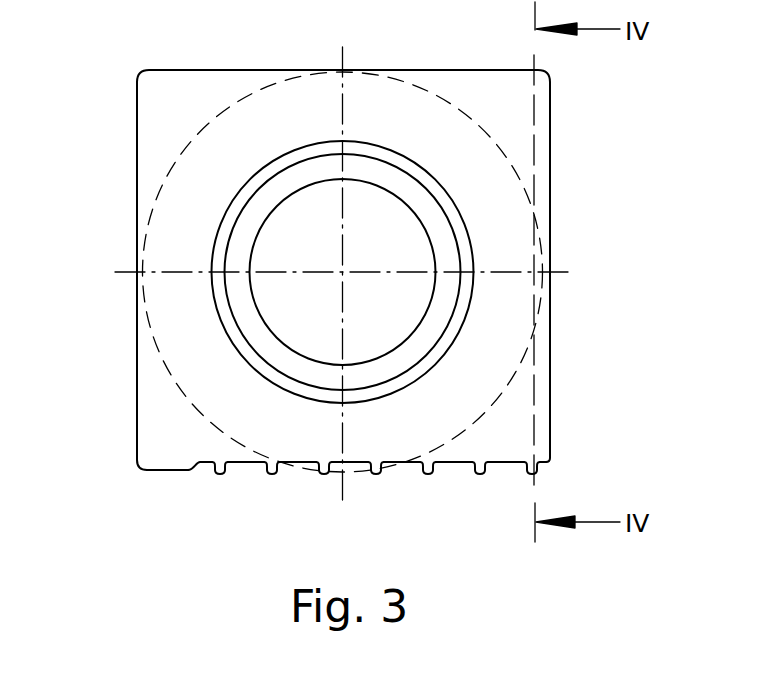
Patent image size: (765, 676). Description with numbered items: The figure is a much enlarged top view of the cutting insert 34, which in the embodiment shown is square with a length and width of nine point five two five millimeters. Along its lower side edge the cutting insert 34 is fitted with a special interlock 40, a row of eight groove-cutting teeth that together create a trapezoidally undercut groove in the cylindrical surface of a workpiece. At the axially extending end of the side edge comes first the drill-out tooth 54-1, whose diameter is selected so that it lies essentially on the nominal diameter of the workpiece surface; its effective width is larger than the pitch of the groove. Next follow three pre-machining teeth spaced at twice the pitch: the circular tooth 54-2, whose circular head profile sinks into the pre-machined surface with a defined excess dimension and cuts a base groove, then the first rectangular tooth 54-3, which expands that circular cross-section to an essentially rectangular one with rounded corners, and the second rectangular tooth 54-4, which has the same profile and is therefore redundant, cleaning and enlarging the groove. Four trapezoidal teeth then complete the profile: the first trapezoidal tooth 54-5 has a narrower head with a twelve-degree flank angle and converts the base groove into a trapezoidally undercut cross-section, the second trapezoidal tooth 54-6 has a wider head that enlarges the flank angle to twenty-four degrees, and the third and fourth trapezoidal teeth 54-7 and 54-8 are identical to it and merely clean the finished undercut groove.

The cutting insert 34 is at (143, 395).
The interlock 40 is at (126, 474).
The drill-out tooth 54-1 is at (160, 471).
The circular tooth 54-2 is at (222, 475).
The first rectangular tooth 54-3 is at (273, 475).
The second rectangular tooth 54-4 is at (326, 475).
The first trapezoidal tooth 54-5 is at (377, 475).
The second trapezoidal tooth 54-6 is at (428, 475).
The third trapezoidal tooth 54-7 is at (479, 475).
The fourth trapezoidal tooth 54-8 is at (541, 470).